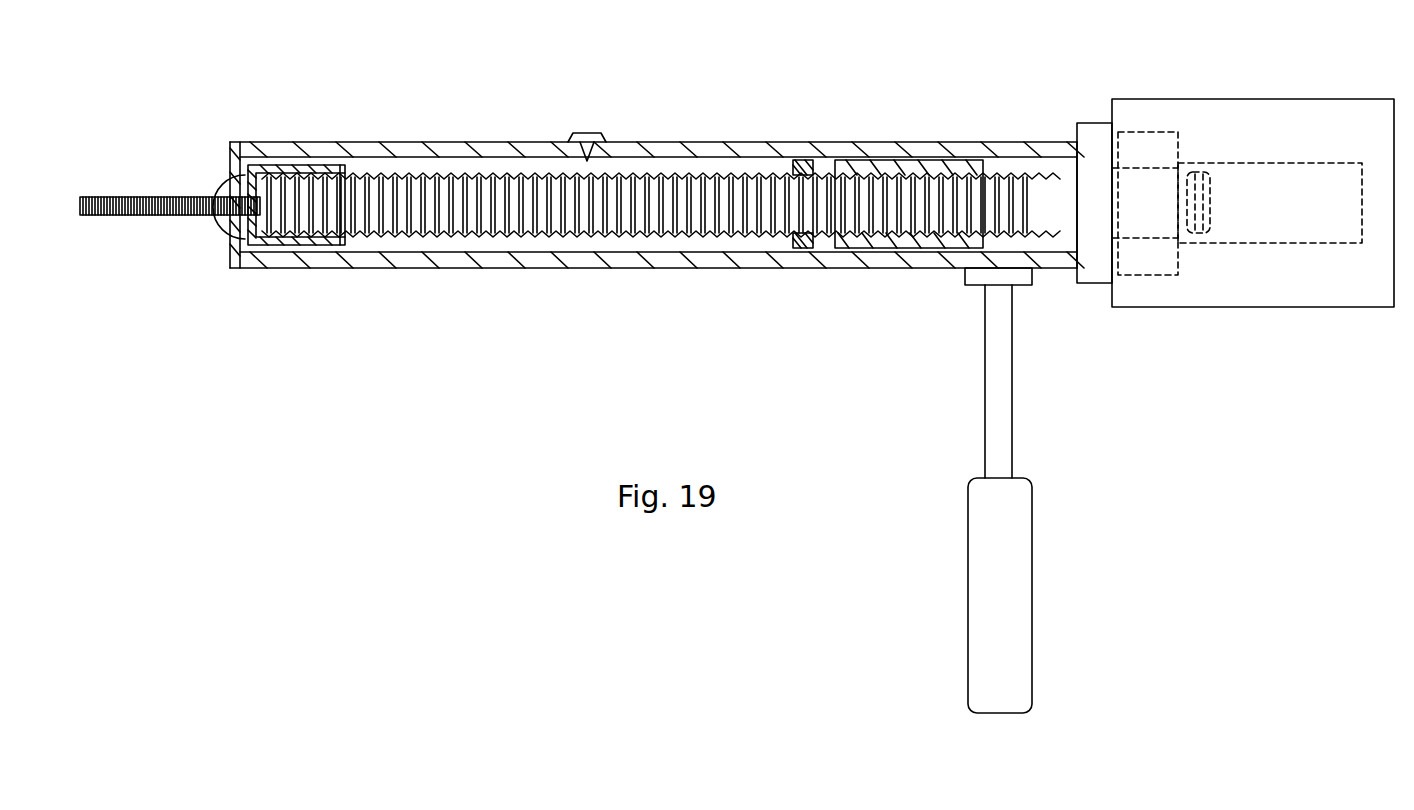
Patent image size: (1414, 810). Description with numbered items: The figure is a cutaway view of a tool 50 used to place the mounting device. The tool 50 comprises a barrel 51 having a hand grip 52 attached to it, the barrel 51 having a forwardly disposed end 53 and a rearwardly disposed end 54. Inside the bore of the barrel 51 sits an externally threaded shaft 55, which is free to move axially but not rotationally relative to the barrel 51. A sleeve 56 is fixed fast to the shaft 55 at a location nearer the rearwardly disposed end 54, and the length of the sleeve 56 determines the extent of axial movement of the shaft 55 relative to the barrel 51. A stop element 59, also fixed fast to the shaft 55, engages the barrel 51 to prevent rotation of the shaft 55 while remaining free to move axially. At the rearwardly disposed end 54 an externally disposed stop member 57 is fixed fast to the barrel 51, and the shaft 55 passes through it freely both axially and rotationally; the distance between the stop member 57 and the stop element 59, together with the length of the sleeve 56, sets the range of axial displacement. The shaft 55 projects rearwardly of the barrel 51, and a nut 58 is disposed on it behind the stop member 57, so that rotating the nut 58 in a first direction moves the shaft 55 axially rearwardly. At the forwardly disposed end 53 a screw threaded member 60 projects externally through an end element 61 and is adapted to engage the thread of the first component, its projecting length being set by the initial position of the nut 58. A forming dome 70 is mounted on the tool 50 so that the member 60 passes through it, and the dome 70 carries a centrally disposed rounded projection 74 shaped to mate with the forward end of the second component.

The tool 50 is at (460, 330).
The barrel 51 is at (773, 127).
The hand grip 52 is at (1032, 553).
The forwardly disposed end 53 is at (260, 148).
The rearwardly disposed end 54 is at (1030, 140).
The externally threaded shaft 55 is at (670, 237).
The sleeve 56 is at (916, 163).
The stop member 57 is at (1092, 123).
The nut 58 is at (1160, 131).
The stop element 59 is at (802, 243).
The screw threaded member 60 is at (175, 197).
The end element 61 is at (257, 247).
The forming dome 70 is at (233, 252).
The rounded projection 74 is at (217, 232).